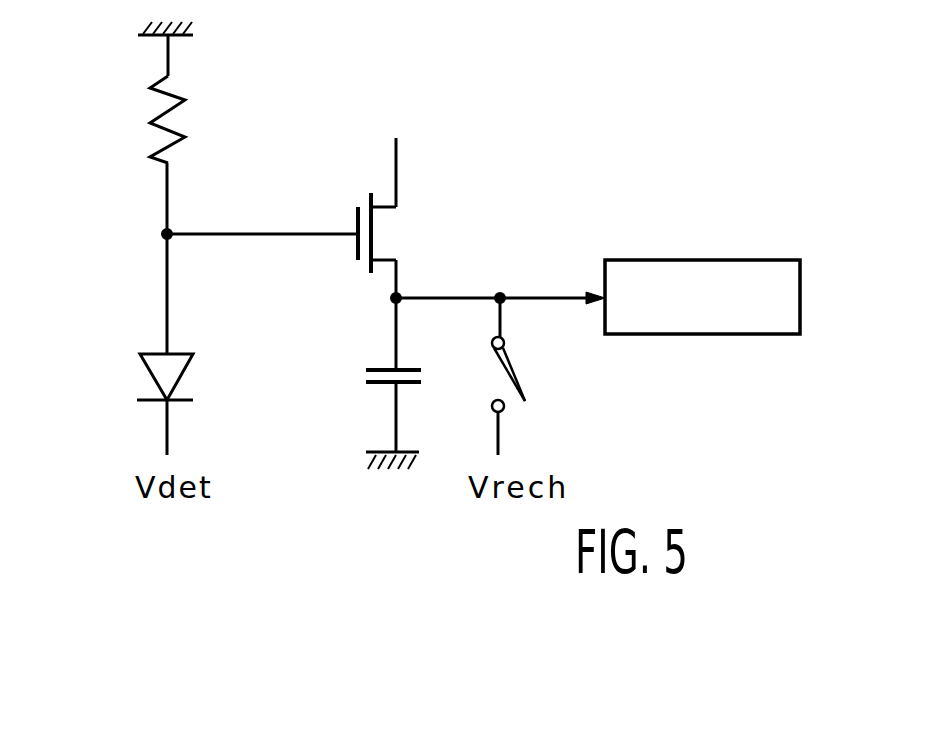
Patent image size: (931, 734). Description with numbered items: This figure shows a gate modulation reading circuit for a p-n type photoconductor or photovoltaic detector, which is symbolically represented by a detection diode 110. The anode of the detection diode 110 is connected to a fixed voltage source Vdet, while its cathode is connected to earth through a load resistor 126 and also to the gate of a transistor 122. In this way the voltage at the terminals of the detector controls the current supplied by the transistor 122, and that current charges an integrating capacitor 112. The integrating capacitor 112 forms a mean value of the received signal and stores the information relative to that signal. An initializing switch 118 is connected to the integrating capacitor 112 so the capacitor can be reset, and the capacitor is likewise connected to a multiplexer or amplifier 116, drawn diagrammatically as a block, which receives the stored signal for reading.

The detection diode 110 is at (148, 378).
The integrating capacitor 112 is at (362, 377).
The multiplexer or amplifier 116 is at (773, 336).
The initializing switch 118 is at (522, 370).
The transistor 122 is at (390, 228).
The load resistor 126 is at (157, 103).